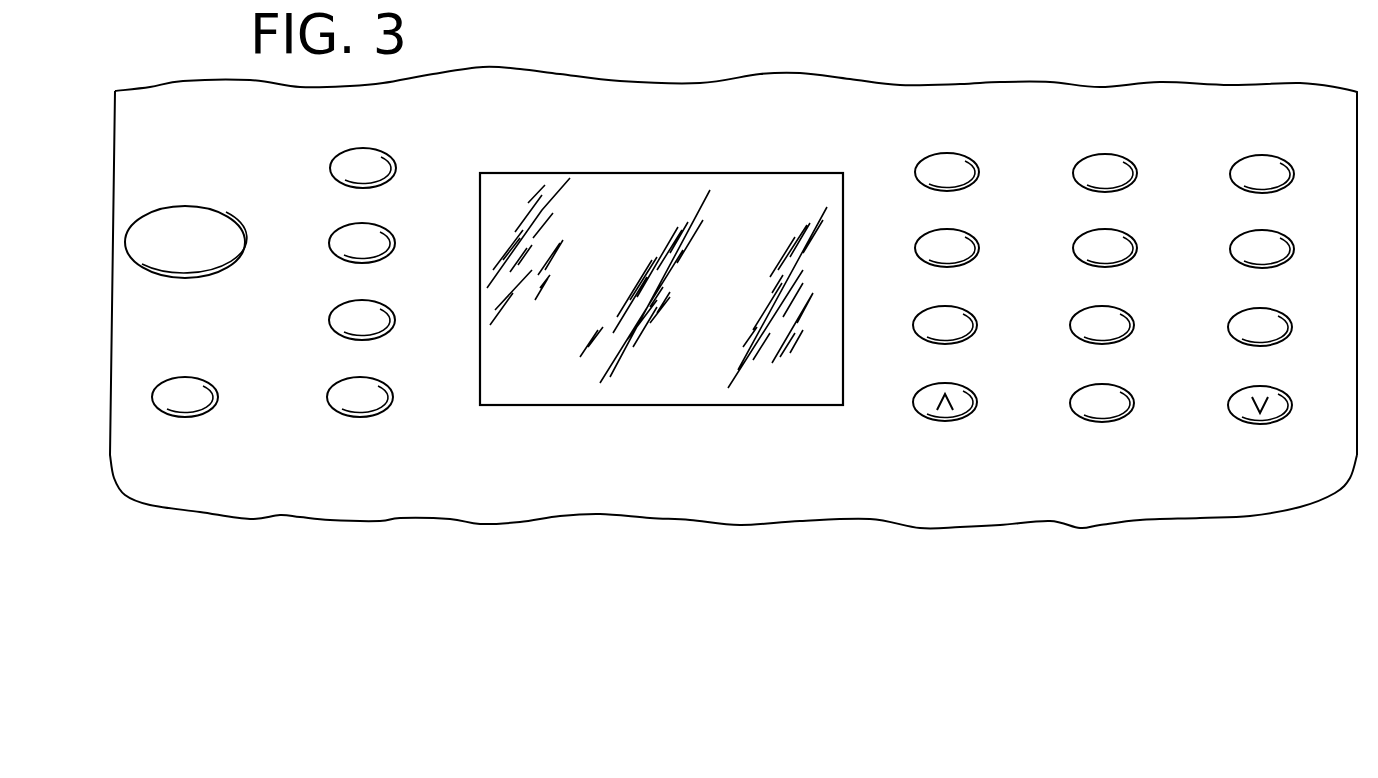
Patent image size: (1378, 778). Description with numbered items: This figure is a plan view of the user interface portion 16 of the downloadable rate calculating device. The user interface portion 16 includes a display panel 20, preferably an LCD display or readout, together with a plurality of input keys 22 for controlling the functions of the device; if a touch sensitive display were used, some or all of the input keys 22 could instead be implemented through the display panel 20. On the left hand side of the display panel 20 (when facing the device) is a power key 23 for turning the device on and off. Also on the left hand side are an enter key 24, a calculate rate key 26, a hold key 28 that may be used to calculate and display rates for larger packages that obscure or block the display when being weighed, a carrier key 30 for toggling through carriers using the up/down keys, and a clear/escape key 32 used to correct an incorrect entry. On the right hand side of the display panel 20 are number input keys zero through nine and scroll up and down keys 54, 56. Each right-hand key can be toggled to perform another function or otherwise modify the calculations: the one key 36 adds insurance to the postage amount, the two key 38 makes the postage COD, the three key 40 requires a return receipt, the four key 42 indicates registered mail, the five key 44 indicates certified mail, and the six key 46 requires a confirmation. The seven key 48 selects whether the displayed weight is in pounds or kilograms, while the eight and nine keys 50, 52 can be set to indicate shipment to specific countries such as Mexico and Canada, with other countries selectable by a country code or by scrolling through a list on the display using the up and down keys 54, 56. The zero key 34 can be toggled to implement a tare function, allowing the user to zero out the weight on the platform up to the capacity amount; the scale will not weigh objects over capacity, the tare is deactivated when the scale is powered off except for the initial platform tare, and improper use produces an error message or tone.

The user interface portion 16 is at (808, 92).
The display panel 20 is at (620, 178).
The input keys 22 is at (872, 434).
The power key 23 is at (196, 218).
The enter key 24 is at (185, 383).
The calculate rate key 26 is at (383, 160).
The hold key 28 is at (389, 243).
The carrier key 30 is at (335, 318).
The clear/escape key 32 is at (382, 398).
The "0" key 34 is at (1135, 405).
The "1" key 36 is at (937, 155).
The "2" key 38 is at (1088, 157).
The "3" key 40 is at (1244, 157).
The "4" key 42 is at (977, 250).
The "5" key 44 is at (1133, 246).
The "6" key 46 is at (1292, 248).
The "7" key 48 is at (914, 318).
The "8" key 50 is at (1071, 329).
The "9" key 52 is at (1230, 326).
The scroll "up" key 54 is at (977, 403).
The scroll "down" key 56 is at (1234, 398).